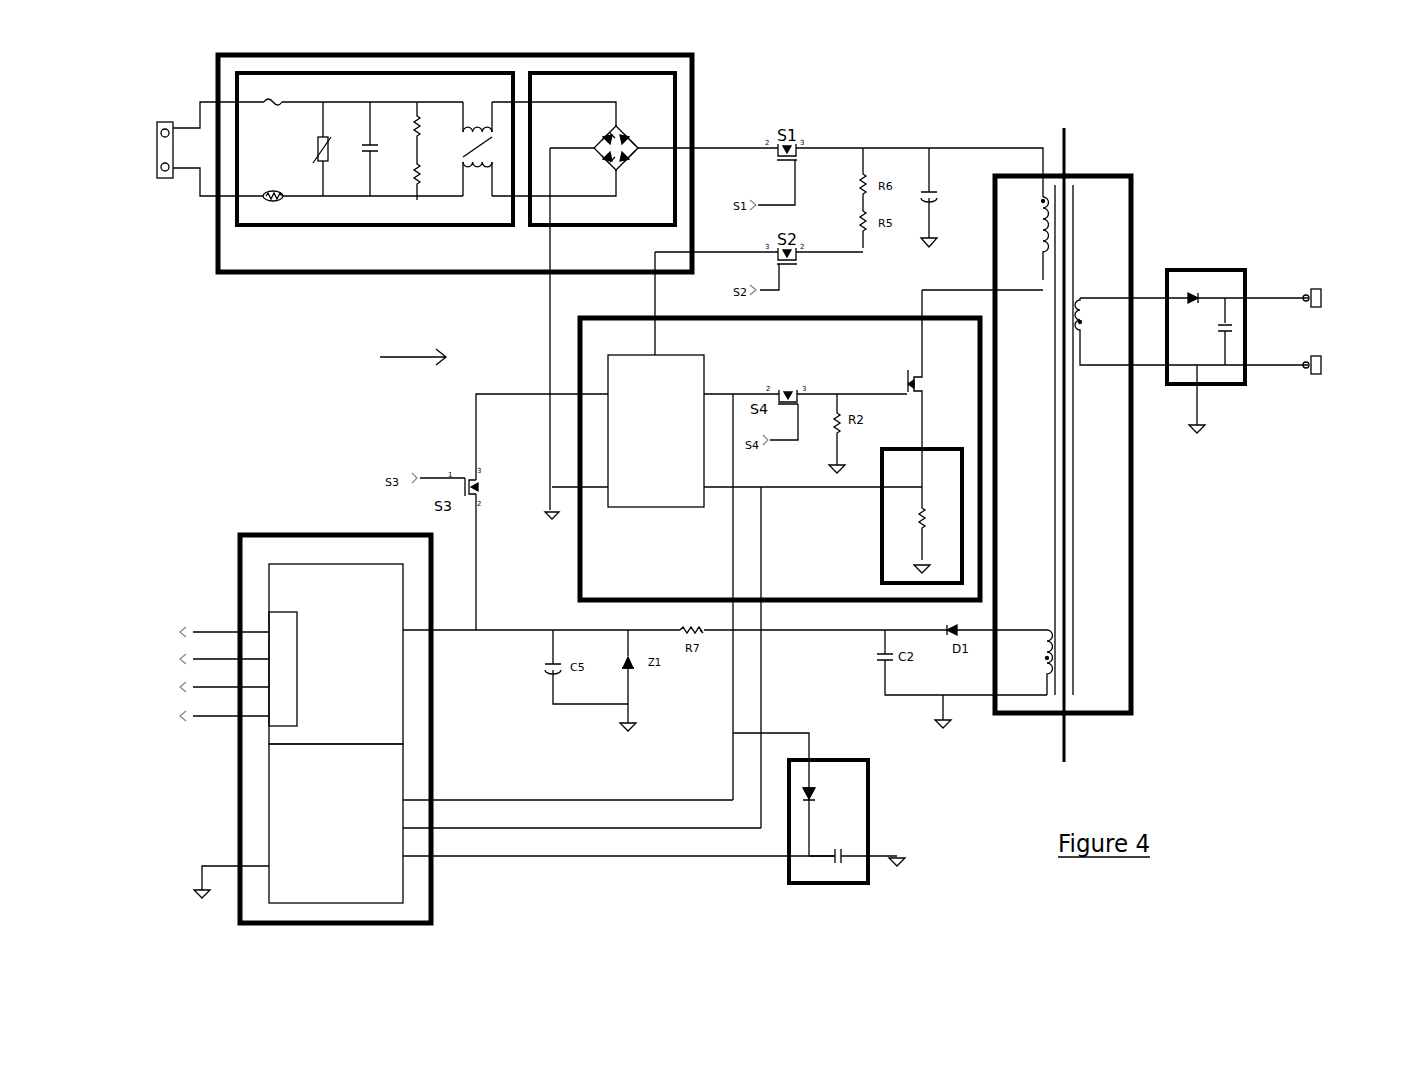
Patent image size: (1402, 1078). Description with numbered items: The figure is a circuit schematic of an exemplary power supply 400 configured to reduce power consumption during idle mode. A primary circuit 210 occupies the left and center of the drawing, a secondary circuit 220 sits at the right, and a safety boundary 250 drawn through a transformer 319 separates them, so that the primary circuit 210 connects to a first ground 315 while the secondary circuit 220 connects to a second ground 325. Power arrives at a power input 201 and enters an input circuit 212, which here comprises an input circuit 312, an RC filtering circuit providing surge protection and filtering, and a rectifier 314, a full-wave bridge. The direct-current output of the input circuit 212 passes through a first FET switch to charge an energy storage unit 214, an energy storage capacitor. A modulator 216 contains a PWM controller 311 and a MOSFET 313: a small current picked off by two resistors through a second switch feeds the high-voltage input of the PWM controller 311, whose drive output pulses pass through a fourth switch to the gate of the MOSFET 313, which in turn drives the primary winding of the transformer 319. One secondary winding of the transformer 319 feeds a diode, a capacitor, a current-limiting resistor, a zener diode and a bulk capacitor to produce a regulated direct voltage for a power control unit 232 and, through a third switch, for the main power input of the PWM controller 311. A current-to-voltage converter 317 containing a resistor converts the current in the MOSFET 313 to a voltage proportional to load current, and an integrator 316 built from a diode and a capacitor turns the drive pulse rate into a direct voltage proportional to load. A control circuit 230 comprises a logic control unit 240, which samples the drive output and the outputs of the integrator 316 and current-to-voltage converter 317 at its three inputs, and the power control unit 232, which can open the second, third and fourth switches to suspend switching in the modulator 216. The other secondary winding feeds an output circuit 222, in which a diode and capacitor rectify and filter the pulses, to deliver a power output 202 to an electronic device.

The power input 201 is at (180, 149).
The power output 202 is at (1332, 331).
The primary circuit 210 is at (394, 358).
The input circuit 212 is at (216, 63).
The energy storage unit 214 is at (931, 193).
The modulator 216 is at (625, 318).
The secondary circuit 220 is at (1276, 266).
The output circuit 222 is at (1247, 283).
The control circuit 230 is at (243, 535).
The power control unit 232 is at (284, 654).
The logic control unit 240 is at (298, 823).
The safety boundary 250 is at (1079, 439).
The PWM controller 311 is at (705, 356).
The input circuit 312 is at (352, 228).
The MOSFET 313 is at (922, 394).
The rectifier 314 is at (602, 74).
The first ground 315 is at (927, 713).
The integrator 316 is at (847, 813).
The current-to-voltage converter 317 is at (885, 490).
The transformer 319 is at (1100, 175).
The second ground 325 is at (1210, 402).
The power supply 400 is at (945, 90).